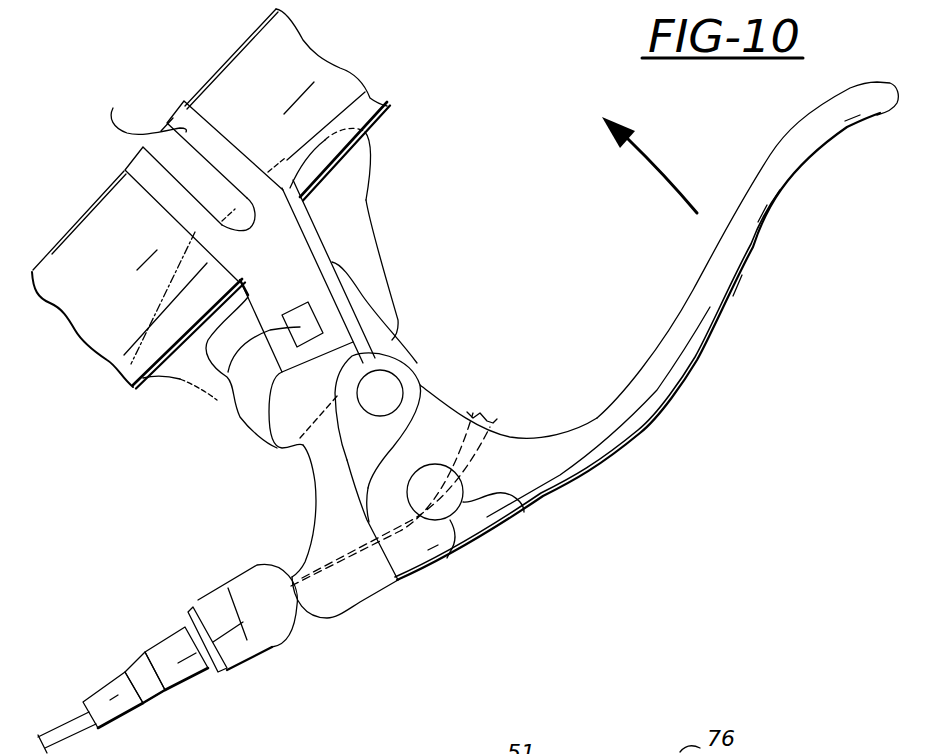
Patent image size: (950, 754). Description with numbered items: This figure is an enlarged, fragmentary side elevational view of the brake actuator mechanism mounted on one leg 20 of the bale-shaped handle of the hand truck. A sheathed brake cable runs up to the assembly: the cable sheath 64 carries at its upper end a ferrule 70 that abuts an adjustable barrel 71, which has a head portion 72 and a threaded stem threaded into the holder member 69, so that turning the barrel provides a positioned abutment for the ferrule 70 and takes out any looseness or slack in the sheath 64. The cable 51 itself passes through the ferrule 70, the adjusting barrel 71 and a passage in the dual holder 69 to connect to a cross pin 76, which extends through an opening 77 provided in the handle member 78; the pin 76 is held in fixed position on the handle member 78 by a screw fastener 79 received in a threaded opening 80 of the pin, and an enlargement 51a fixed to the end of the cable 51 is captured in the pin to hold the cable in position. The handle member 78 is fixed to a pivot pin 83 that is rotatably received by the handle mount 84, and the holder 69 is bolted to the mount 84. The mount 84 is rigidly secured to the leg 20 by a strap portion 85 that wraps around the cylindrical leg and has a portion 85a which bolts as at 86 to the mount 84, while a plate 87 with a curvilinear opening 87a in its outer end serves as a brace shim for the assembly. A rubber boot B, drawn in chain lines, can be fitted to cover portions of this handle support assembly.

The leg 20 is at (234, 84).
The cable 51 is at (57, 730).
The enlargement 51a is at (657, 753).
The cable sheath 64 is at (97, 700).
The holder member 69 is at (250, 572).
The ferrule 70 is at (140, 668).
The adjustable barrel 71 is at (148, 626).
The head portion 72 is at (178, 641).
The cross pin 76 is at (524, 512).
The opening 77 is at (447, 558).
The handle member 78 is at (646, 381).
The screw fastener 79 is at (498, 416).
The threaded opening 80 is at (428, 488).
The pivot pin 83 is at (403, 393).
The handle mount 84 is at (306, 478).
The strap portion 85 is at (148, 178).
The portion of strap 85a is at (276, 432).
The bolt 86 is at (215, 396).
The plate 87 is at (316, 233).
The curvilinear opening 87a is at (367, 168).
The rubber boot B is at (383, 262).